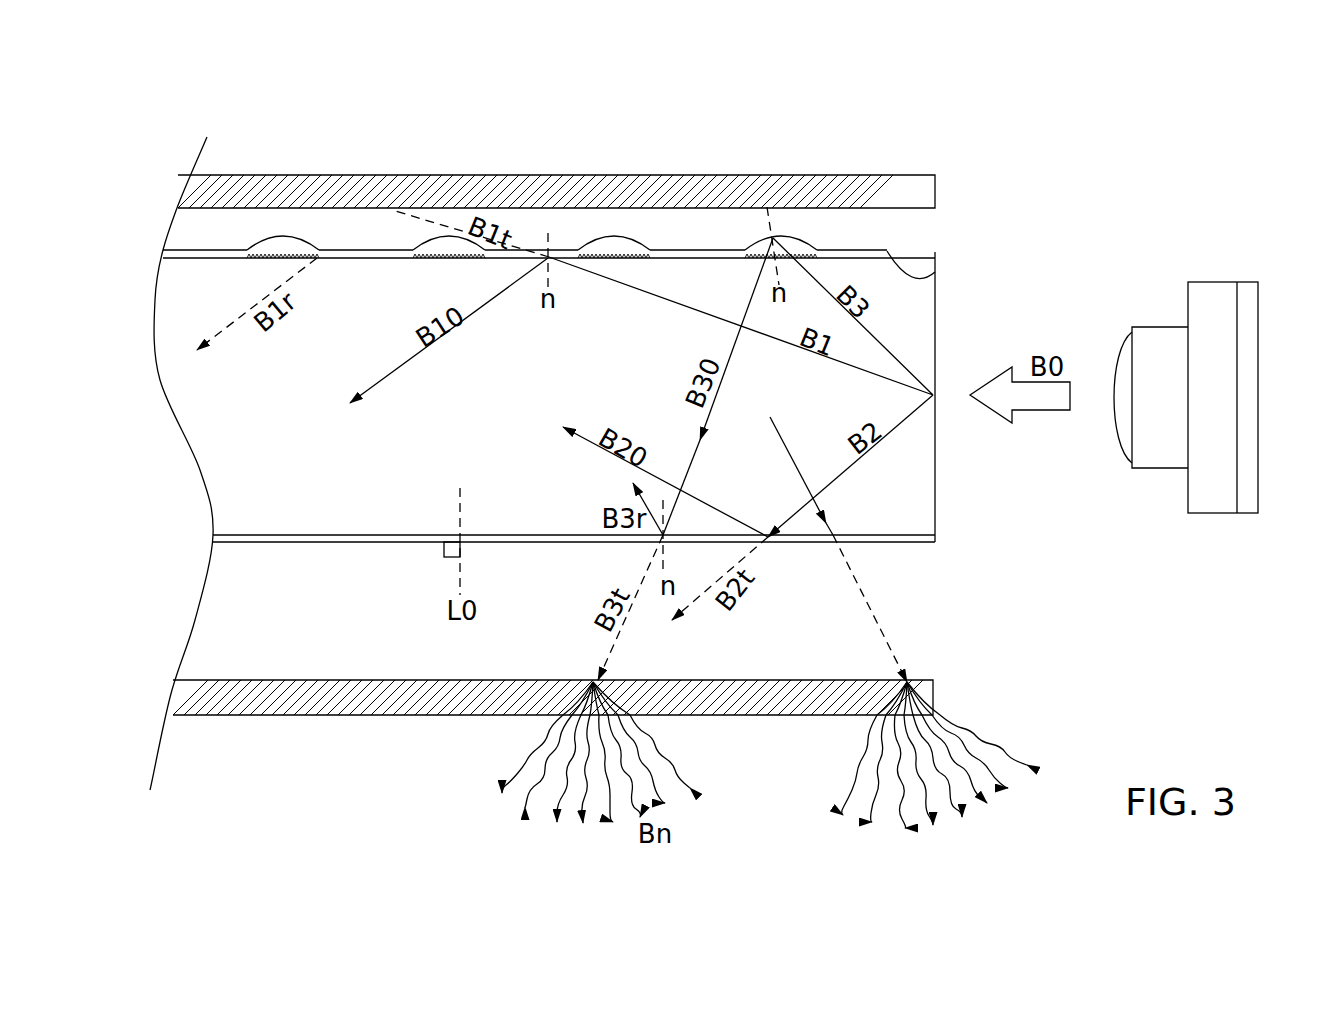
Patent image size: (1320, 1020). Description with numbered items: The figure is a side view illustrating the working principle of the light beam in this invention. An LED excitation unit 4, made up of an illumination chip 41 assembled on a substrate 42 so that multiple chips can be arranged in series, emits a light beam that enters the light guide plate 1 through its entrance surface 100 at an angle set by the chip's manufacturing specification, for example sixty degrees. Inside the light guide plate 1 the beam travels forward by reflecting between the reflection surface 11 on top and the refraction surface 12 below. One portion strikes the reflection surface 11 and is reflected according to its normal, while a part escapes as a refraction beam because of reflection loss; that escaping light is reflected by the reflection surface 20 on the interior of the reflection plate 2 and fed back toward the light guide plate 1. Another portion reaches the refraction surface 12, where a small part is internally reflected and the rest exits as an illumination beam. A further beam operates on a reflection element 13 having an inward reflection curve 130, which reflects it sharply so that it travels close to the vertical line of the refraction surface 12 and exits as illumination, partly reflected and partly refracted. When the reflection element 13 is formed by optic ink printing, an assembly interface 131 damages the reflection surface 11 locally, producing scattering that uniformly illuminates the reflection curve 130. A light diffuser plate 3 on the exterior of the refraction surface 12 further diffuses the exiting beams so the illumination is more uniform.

The light guide plate 1 is at (578, 339).
The reflection plate 2 is at (542, 195).
The light diffuser plate 3 is at (365, 697).
The LED excitation unit 4 is at (1172, 382).
The reflection surface 11 is at (938, 275).
The refraction surface 12 is at (893, 537).
The reflection element 13 is at (439, 176).
The reflection surface 20 is at (355, 210).
The entrance surface 100 is at (937, 325).
The reflection curve 130 is at (612, 243).
The assembly interface 131 is at (265, 256).
The illumination chip 41 is at (1115, 425).
The substrate 42 is at (1213, 500).